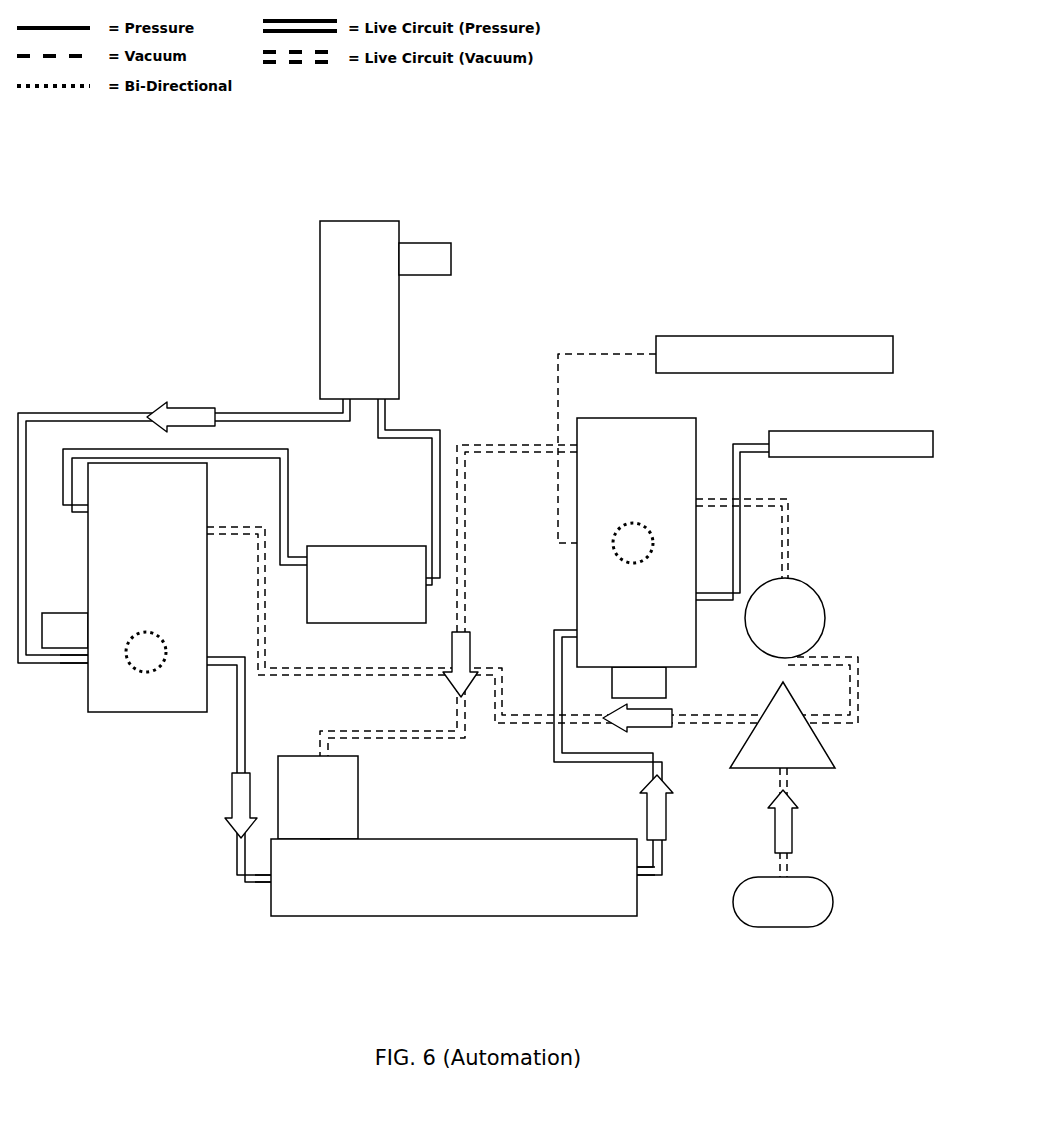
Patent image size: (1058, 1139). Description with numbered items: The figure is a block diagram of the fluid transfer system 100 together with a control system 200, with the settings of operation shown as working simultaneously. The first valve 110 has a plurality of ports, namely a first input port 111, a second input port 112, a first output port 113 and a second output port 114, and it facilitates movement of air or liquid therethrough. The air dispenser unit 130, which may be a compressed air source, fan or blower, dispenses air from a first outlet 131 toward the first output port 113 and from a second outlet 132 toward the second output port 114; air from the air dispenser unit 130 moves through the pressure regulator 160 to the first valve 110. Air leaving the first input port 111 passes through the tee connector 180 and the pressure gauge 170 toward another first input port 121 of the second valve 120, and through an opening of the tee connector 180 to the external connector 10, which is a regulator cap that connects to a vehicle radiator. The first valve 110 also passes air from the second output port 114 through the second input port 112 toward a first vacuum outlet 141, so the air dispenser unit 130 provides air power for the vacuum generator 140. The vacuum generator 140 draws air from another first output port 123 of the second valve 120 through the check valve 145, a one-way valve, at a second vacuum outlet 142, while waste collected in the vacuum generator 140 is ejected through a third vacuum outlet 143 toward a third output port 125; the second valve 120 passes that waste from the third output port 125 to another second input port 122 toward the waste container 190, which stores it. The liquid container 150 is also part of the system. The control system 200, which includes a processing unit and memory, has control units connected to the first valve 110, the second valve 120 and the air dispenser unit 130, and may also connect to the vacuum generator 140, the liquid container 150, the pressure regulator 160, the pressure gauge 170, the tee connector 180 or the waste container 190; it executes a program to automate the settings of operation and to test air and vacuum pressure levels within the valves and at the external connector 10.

The fluid transfer system 100 is at (148, 348).
The external connector 10 is at (783, 902).
The first valve 110 is at (147, 587).
The first input port 111 is at (207, 532).
The second input port 112 is at (207, 668).
The first output port 113 is at (88, 523).
The second output port 114 is at (88, 668).
The second valve 120 is at (636, 542).
The another first input port 121 is at (696, 502).
The another second input port 122 is at (696, 600).
The another first output port 123 is at (577, 440).
The third output port 125 is at (573, 632).
The air dispenser unit 130 is at (359, 310).
The first outlet 131 is at (382, 397).
The second outlet 132 is at (343, 397).
The vacuum generator 140 is at (454, 877).
The first vacuum outlet 141 is at (271, 882).
The second vacuum outlet 142 is at (320, 839).
The third vacuum outlet 143 is at (637, 875).
The check valve 145 is at (318, 797).
The liquid container 150 is at (774, 354).
The pressure regulator 160 is at (366, 584).
The pressure gauge 170 is at (785, 618).
The tee connector 180 is at (782, 725).
The waste container 190 is at (851, 444).
The control system 200 is at (354, 470).